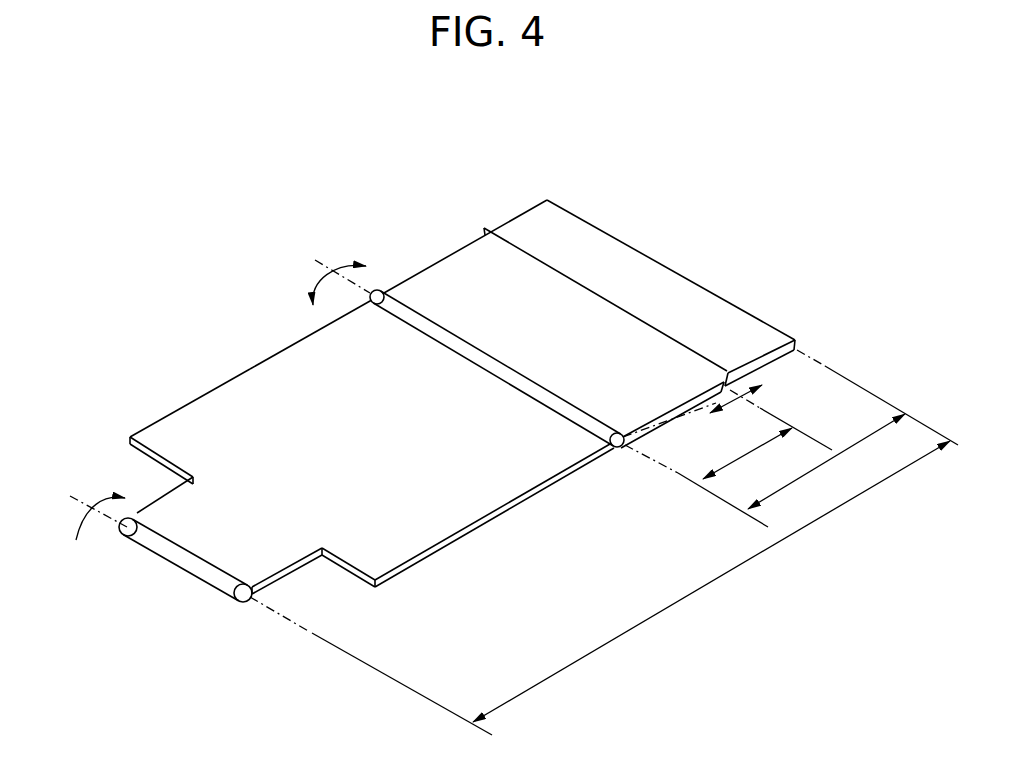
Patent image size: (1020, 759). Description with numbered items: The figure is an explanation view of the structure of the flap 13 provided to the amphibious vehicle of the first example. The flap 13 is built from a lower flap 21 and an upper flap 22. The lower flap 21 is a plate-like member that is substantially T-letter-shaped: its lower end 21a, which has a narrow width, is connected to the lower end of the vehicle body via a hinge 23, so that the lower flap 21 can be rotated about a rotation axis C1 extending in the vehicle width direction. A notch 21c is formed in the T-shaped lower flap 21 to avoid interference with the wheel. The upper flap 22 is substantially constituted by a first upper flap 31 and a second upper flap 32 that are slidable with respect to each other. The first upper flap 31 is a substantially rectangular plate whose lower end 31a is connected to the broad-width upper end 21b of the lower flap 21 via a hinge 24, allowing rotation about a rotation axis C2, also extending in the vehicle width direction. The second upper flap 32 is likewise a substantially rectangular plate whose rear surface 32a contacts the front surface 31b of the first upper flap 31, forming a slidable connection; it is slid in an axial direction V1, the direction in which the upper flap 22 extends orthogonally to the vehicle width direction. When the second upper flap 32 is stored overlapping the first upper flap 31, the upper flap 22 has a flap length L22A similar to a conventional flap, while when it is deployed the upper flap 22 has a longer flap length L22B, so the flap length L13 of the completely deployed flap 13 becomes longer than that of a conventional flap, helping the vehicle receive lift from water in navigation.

The flap 13 is at (616, 216).
The lower flap 21 is at (220, 386).
The lower end of lower flap 21a is at (137, 511).
The upper end of lower flap 21b is at (308, 331).
The notch 21c is at (130, 436).
The upper flap 22 is at (532, 146).
The hinge 23 is at (160, 559).
The hinge 24 is at (456, 338).
The first upper flap 31 is at (461, 232).
The lower end of first upper flap 31a is at (379, 290).
The front surface of first upper flap 31b is at (626, 452).
The second upper flap 32 is at (497, 226).
The rear surface of second upper flap 32a is at (710, 312).
The rotation axis C1 is at (87, 518).
The rotation axis C2 is at (341, 275).
The axial direction V1 is at (692, 411).
The flap length of upper flap in short length state L22A is at (767, 439).
The flap length of upper flap in long length state L22B is at (765, 470).
The flap length of flap L13 is at (604, 542).